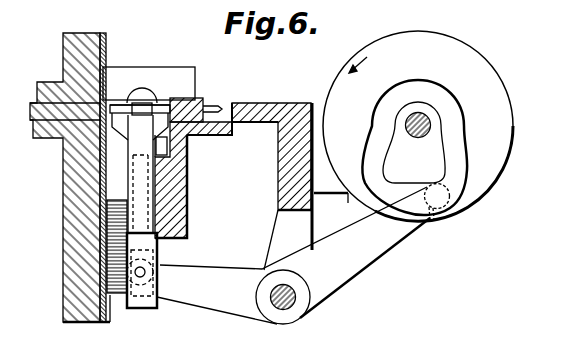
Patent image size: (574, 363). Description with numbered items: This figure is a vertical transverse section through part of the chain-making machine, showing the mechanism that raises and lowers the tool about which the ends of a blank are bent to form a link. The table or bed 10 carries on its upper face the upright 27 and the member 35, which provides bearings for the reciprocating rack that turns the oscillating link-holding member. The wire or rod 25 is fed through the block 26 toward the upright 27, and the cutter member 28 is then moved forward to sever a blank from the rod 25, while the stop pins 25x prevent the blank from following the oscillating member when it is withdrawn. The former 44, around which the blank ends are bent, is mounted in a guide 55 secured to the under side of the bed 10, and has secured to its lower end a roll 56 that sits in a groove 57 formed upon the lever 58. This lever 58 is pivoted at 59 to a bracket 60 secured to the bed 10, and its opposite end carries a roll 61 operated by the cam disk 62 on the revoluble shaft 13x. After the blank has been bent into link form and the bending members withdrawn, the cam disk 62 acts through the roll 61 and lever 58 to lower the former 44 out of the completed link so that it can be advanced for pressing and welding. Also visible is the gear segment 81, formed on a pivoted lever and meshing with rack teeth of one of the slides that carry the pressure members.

The table or bed 10 is at (258, 115).
The revoluble shaft 13x is at (430, 120).
The wire or rod 25 is at (230, 107).
The stop pins 25x is at (118, 105).
The block 26 is at (200, 107).
The upright 27 is at (70, 62).
The cutter member 28 is at (170, 97).
The member 35 is at (178, 75).
The former 44 is at (153, 110).
The guide 55 is at (185, 194).
The roll 56 is at (145, 308).
The groove 57 is at (160, 273).
The lever 58 is at (237, 307).
The pivot 59 is at (283, 310).
The bracket 60 is at (302, 227).
The roll 61 is at (429, 226).
The cam disk 62 is at (513, 127).
The gear segment 81 is at (117, 292).